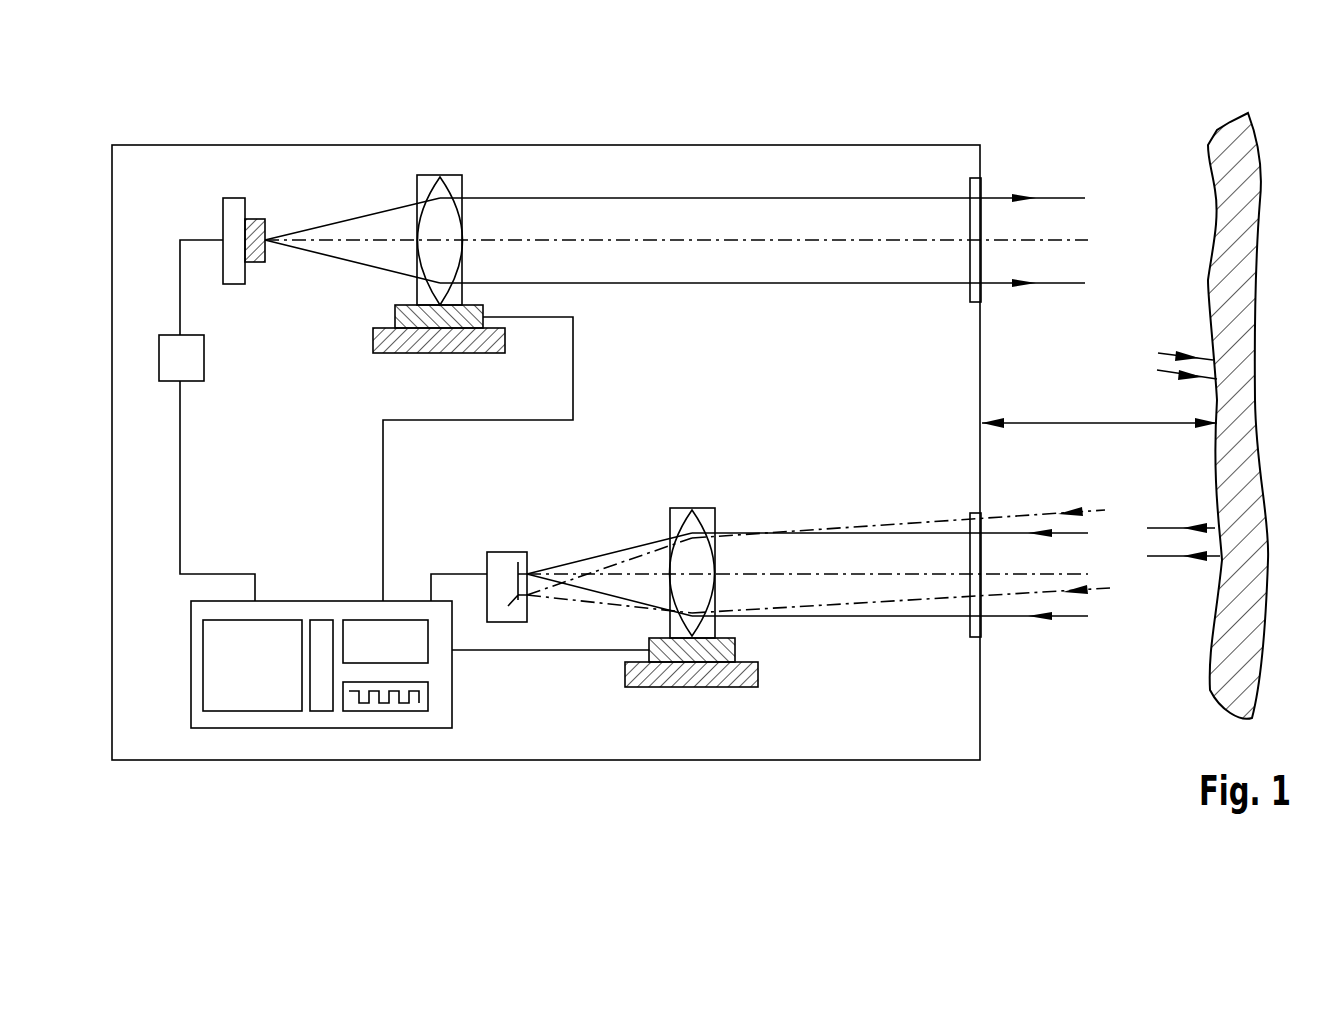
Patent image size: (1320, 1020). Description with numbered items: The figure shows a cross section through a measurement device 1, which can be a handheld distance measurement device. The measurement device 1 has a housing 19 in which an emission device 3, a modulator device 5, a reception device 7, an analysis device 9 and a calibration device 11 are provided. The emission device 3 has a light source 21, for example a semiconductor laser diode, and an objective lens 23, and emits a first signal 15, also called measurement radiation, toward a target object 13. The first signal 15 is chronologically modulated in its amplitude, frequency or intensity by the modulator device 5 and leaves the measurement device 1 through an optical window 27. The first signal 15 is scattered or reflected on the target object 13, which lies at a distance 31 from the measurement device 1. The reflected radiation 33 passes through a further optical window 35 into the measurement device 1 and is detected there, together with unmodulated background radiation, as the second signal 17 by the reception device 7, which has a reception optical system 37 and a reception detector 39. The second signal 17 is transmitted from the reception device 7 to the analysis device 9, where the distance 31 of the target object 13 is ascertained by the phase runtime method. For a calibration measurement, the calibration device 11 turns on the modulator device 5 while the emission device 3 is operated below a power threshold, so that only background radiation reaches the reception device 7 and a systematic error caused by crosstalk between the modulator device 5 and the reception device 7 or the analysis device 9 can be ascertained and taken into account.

The measurement device 1 is at (595, 397).
The emission device 3 is at (320, 278).
The modulator device 5 is at (165, 340).
The reception device 7 is at (601, 536).
The analysis device 9 is at (330, 712).
The calibration device 11 is at (252, 700).
The target object 13 is at (1190, 278).
The first signal 15 is at (627, 215).
The second signal 17 is at (790, 545).
The housing 19 is at (782, 145).
The light source 21 is at (258, 220).
The objective lens 23 is at (457, 185).
The optical window 27 is at (973, 187).
The distance 31 is at (1098, 425).
The reflected radiation 33 is at (1165, 528).
The further optical window 35 is at (978, 628).
The reception optical system 37 is at (706, 510).
The reception detector 39 is at (505, 555).